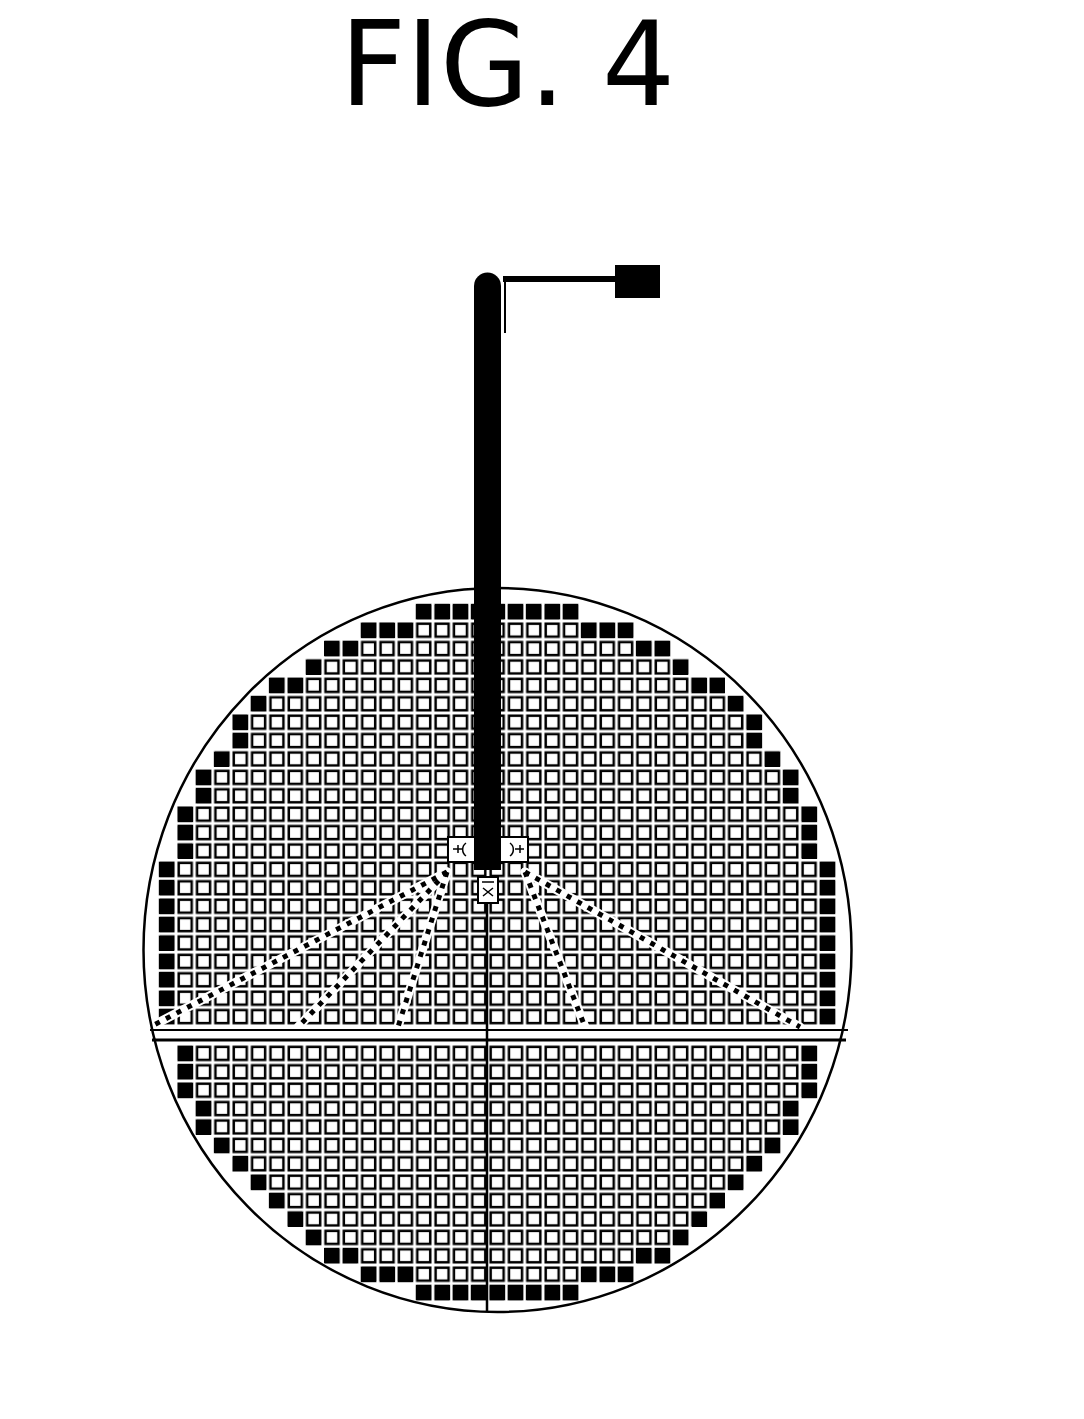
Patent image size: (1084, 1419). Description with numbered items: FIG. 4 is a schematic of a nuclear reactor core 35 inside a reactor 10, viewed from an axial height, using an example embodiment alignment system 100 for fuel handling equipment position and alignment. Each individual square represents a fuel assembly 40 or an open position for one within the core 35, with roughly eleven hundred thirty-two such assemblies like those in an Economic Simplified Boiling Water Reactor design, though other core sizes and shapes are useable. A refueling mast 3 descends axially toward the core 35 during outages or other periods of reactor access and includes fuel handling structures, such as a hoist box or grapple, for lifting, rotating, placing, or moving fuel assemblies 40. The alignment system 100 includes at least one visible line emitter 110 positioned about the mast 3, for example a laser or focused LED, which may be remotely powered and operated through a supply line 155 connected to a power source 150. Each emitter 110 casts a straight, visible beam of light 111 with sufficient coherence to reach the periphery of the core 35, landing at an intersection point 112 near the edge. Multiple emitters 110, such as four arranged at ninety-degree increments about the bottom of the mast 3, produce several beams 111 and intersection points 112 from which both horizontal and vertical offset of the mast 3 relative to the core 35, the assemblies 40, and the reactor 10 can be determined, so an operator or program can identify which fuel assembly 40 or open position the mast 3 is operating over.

The alignment system 100 is at (838, 473).
The refueling mast 3 is at (475, 507).
The reactor 10 is at (205, 1185).
The nuclear reactor core 35 is at (205, 777).
The fuel assemblies 40 is at (735, 1215).
The visible line emitter 110 is at (530, 845).
The beam of light 111 is at (848, 1030).
The intersection point 112 is at (150, 1030).
The power source 150 is at (660, 282).
The supply line 155 is at (575, 282).